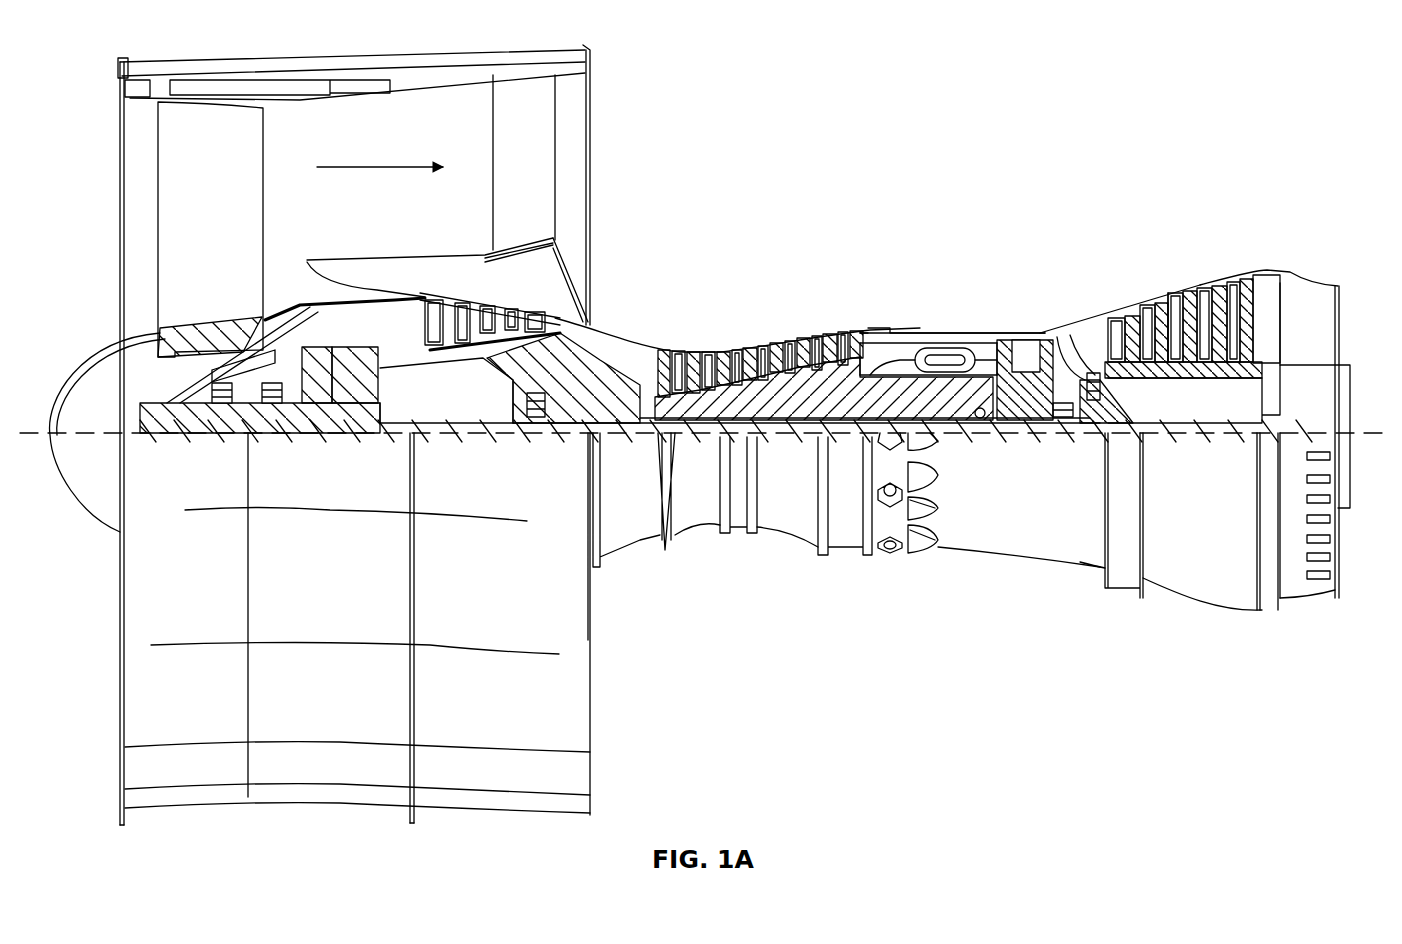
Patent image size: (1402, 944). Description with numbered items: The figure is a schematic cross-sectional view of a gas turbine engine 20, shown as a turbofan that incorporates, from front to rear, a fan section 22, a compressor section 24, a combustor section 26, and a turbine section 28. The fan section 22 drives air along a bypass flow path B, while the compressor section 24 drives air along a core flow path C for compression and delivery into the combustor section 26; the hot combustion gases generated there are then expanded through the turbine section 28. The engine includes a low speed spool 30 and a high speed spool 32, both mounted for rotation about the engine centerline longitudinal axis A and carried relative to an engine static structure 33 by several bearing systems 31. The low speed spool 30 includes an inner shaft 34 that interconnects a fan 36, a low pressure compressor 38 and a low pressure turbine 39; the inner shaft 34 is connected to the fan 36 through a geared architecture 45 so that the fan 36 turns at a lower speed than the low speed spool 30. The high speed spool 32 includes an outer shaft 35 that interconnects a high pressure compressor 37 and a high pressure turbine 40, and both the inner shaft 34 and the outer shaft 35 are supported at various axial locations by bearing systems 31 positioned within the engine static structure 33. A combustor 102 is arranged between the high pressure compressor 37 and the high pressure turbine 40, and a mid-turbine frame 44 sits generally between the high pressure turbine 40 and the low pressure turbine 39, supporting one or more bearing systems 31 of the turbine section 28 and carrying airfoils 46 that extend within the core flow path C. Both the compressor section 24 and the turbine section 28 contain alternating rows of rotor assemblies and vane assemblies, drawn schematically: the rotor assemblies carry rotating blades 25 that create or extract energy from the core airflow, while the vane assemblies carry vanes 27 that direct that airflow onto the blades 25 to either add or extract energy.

The gas turbine engine 20 is at (1096, 118).
The fan section 22 is at (216, 50).
The compressor section 24 is at (673, 300).
The blades 25 is at (437, 300).
The combustor section 26 is at (921, 300).
The vanes 27 is at (488, 305).
The turbine section 28 is at (1189, 240).
The low speed spool 30 is at (806, 430).
The bearing systems 31 is at (228, 403).
The high speed spool 32 is at (836, 358).
The engine static structure 33 is at (853, 548).
The inner shaft 34 is at (604, 436).
The outer shaft 35 is at (980, 425).
The fan 36 is at (208, 199).
The high pressure compressor 37 is at (732, 356).
The low pressure compressor 38 is at (490, 259).
The low pressure turbine 39 is at (1183, 292).
The high pressure turbine 40 is at (1025, 355).
The mid-turbine frame 44 is at (1090, 326).
The geared architecture 45 is at (355, 402).
The airfoils 46 is at (1062, 372).
The combustor 102 is at (935, 350).